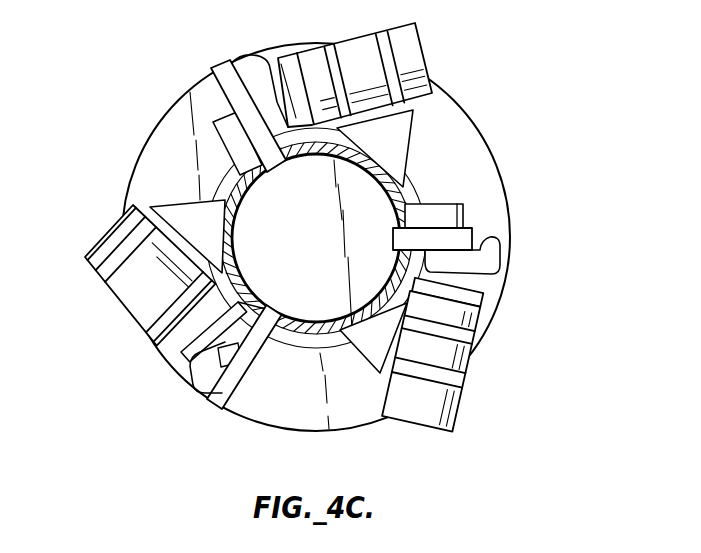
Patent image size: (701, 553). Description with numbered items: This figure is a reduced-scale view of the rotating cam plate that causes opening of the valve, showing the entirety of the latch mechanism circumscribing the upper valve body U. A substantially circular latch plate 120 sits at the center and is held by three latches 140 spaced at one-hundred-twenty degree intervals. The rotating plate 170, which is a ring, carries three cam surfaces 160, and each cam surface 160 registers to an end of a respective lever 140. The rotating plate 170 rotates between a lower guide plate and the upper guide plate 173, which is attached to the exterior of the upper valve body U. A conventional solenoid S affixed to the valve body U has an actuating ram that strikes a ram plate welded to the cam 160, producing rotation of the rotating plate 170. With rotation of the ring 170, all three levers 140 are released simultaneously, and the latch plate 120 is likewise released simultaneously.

The latch plate 120 is at (333, 249).
The latch 140 is at (201, 436).
The cam surface 160 is at (255, 76).
The rotating plate 170 is at (488, 181).
The upper guide plate 173 is at (315, 346).
The solenoid S is at (412, 59).
The upper valve body U is at (413, 181).